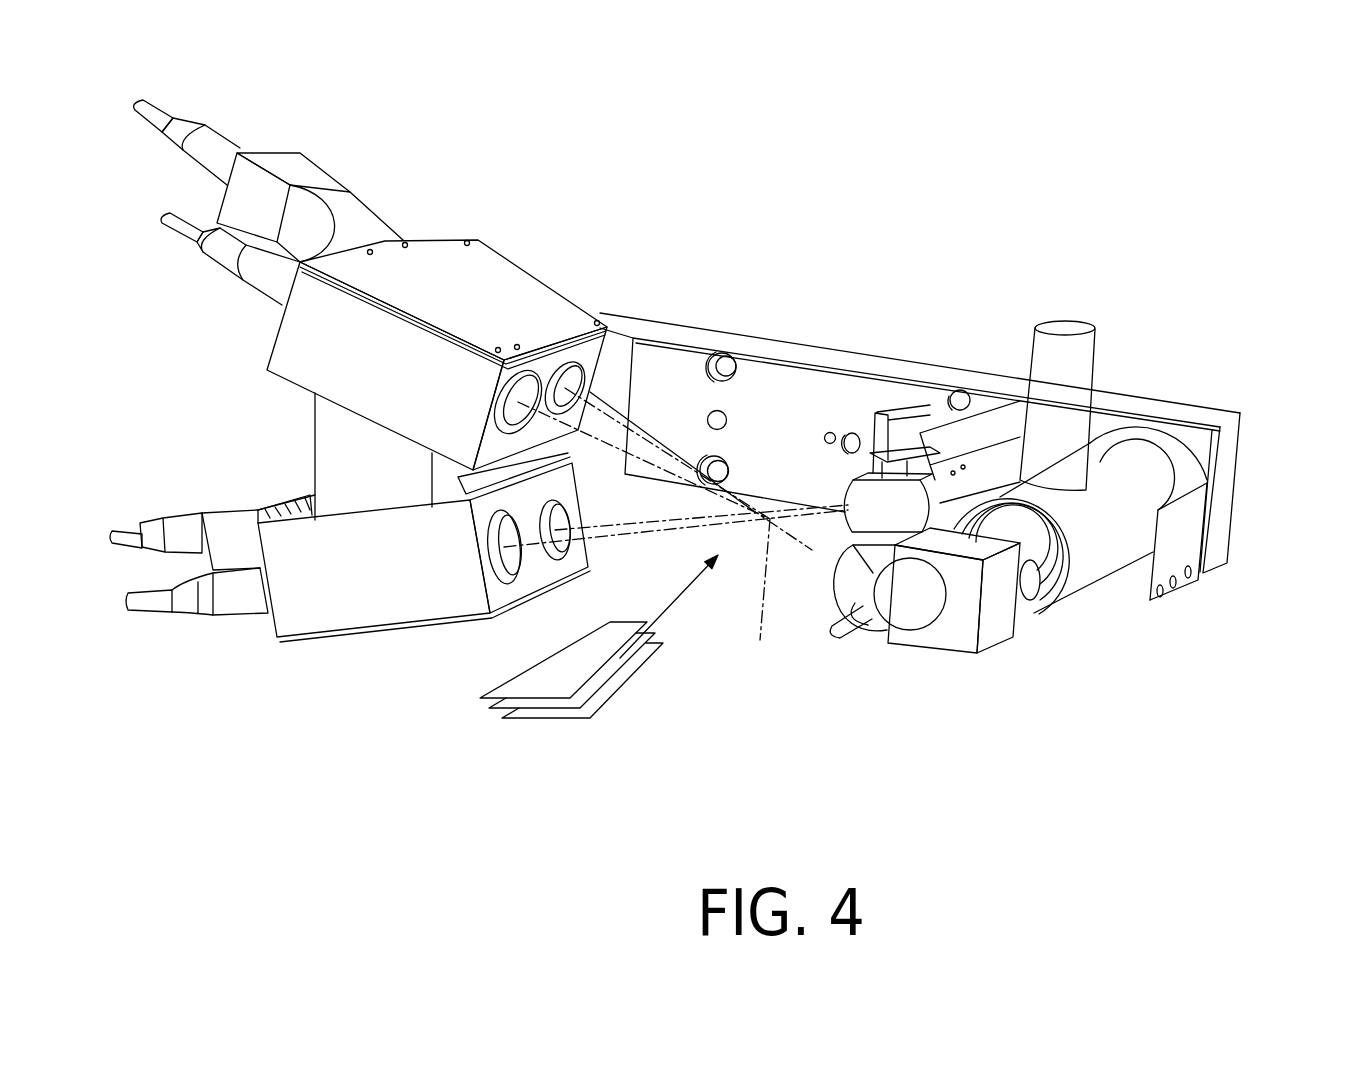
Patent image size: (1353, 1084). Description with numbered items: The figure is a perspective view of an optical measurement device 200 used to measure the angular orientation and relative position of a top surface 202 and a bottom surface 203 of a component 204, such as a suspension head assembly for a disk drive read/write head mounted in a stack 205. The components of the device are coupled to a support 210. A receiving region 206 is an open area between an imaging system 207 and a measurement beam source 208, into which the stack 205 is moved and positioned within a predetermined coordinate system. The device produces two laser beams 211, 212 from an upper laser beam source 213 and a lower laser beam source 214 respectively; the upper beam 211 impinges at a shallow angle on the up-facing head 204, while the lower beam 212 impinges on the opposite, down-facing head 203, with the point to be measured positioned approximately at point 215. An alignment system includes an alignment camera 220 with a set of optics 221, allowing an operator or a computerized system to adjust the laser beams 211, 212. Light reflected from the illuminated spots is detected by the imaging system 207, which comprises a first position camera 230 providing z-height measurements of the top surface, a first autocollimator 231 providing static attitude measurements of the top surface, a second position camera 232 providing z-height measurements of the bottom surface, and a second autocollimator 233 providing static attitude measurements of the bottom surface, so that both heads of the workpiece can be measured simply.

The measurement device 200 is at (740, 234).
The top surface 202 is at (572, 660).
The bottom surface 203 is at (642, 646).
The component 204 is at (510, 688).
The stack 205 is at (499, 751).
The receiving region 206 is at (673, 518).
The imaging system 207 is at (512, 237).
The measurement beam source 208 is at (980, 689).
The support 210 is at (760, 343).
The laser beam 211 is at (898, 505).
The laser beam 212 is at (808, 540).
The upper laser beam source 213 is at (1085, 366).
The lower laser beam source 214 is at (863, 565).
The point 215 is at (710, 455).
The alignment camera 220 is at (1067, 550).
The set of optics 221 is at (1168, 543).
The first position camera 230 is at (290, 165).
The first autocollimator 231 is at (253, 281).
The second position camera 232 is at (237, 523).
The second autocollimator 233 is at (242, 583).